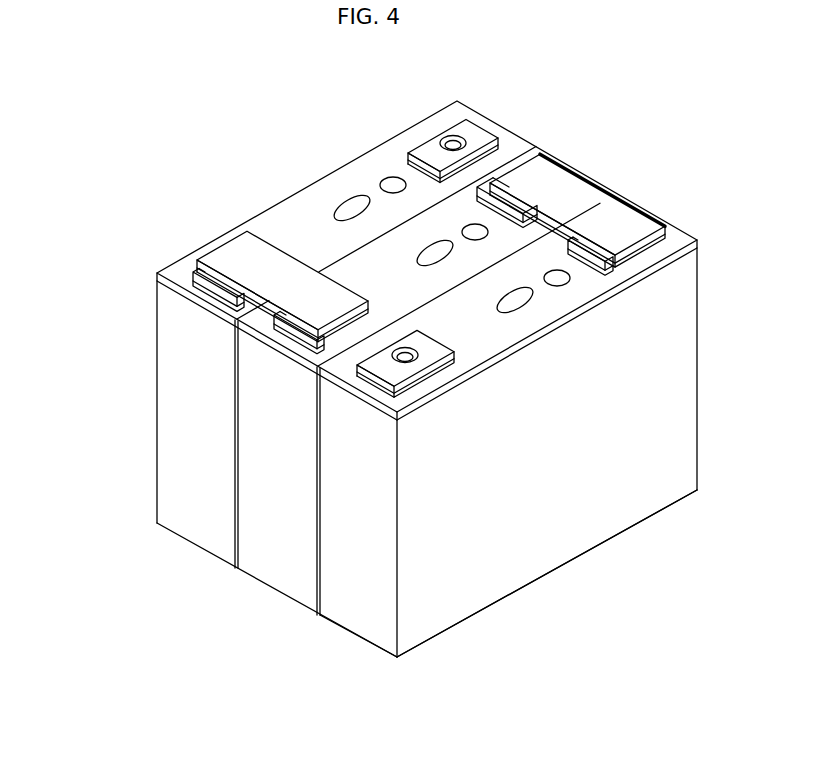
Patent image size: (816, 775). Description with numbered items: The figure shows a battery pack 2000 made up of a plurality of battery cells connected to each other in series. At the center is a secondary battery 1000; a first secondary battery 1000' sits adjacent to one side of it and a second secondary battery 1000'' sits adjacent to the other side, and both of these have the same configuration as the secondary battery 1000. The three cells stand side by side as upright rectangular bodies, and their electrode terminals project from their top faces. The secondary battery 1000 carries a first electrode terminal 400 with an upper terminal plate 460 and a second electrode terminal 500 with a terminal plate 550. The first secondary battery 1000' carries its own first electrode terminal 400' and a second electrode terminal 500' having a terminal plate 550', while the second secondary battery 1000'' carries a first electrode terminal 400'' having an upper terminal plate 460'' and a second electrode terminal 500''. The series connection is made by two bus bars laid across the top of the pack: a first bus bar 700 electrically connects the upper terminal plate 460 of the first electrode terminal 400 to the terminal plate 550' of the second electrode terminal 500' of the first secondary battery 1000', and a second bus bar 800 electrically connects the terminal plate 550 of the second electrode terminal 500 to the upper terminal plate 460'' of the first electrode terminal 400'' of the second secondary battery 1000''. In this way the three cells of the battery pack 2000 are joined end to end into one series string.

The battery pack 2000 is at (126, 150).
The secondary battery 1000 is at (390, 431).
The first secondary battery 1000' is at (305, 376).
The second secondary battery 1000'' is at (498, 607).
The first electrode terminal 400 is at (196, 360).
The first electrode terminal 400' is at (436, 124).
The first electrode terminal 400'' is at (627, 309).
The second electrode terminal 500 is at (507, 151).
The second electrode terminal 500' is at (153, 284).
The second electrode terminal 500'' is at (441, 392).
The upper terminal plate 460 is at (196, 332).
The upper terminal plate 460'' is at (594, 316).
The terminal plate 550 is at (535, 157).
The terminal plate 550' is at (171, 258).
The first bus bar 700 is at (240, 245).
The second bus bar 800 is at (605, 200).